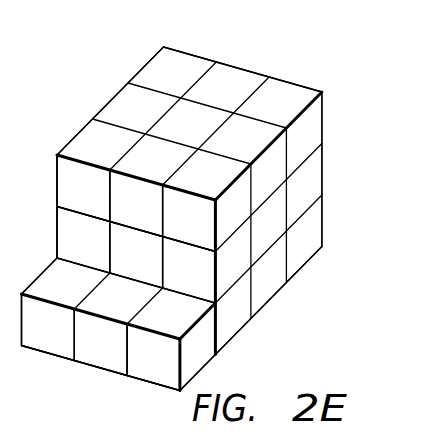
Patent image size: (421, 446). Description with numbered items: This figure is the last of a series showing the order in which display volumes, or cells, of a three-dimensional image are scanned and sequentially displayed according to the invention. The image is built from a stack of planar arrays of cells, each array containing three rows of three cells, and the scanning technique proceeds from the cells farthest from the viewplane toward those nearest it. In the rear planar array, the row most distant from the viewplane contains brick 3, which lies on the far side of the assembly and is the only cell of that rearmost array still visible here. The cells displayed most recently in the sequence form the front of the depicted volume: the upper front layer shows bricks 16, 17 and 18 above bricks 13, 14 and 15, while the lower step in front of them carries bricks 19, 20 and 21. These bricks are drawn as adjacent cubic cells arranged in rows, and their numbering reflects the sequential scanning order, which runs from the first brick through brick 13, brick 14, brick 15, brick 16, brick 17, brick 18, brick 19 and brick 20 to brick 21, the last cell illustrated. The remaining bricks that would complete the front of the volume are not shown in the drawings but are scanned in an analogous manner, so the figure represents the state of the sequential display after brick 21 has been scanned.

The brick 3 is at (172, 219).
The brick 13 is at (83, 240).
The brick 14 is at (136, 255).
The brick 15 is at (189, 270).
The brick 16 is at (83, 188).
The brick 17 is at (136, 203).
The brick 18 is at (189, 218).
The brick 19 is at (48, 327).
The brick 20 is at (100, 342).
The brick 21 is at (153, 357).